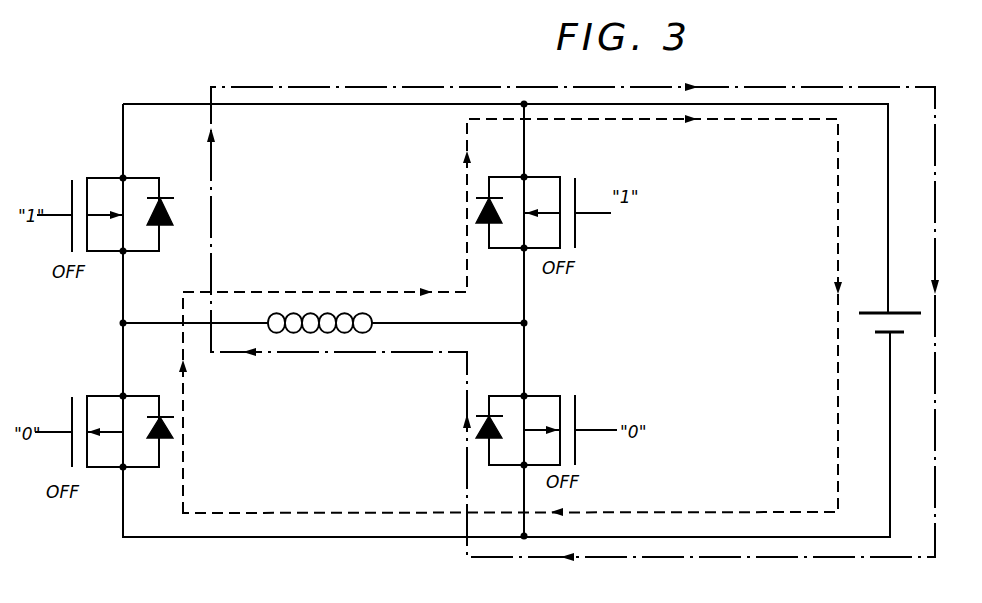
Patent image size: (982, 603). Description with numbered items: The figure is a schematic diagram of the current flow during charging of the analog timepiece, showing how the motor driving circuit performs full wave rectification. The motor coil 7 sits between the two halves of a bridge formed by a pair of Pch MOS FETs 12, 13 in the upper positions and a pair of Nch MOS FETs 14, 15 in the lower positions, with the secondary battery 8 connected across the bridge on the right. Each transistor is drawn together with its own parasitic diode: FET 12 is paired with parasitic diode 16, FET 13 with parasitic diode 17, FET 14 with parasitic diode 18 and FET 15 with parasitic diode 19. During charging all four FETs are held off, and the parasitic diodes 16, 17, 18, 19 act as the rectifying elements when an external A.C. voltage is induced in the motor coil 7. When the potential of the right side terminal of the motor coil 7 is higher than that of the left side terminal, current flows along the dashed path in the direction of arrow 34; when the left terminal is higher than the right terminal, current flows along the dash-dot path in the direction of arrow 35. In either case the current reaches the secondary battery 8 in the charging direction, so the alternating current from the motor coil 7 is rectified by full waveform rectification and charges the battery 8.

The motor coil 7 is at (372, 320).
The secondary battery 8 is at (892, 313).
The Pch MOS FET 12 is at (106, 178).
The Pch MOS FET 13 is at (540, 177).
The Nch MOS FET 14 is at (112, 396).
The Nch MOS FET 15 is at (528, 396).
The parasitic diode 16 is at (160, 198).
The parasitic diode 17 is at (489, 198).
The parasitic diode 18 is at (160, 417).
The parasitic diode 19 is at (489, 416).
The arrow 34 is at (312, 292).
The arrow 35 is at (300, 352).